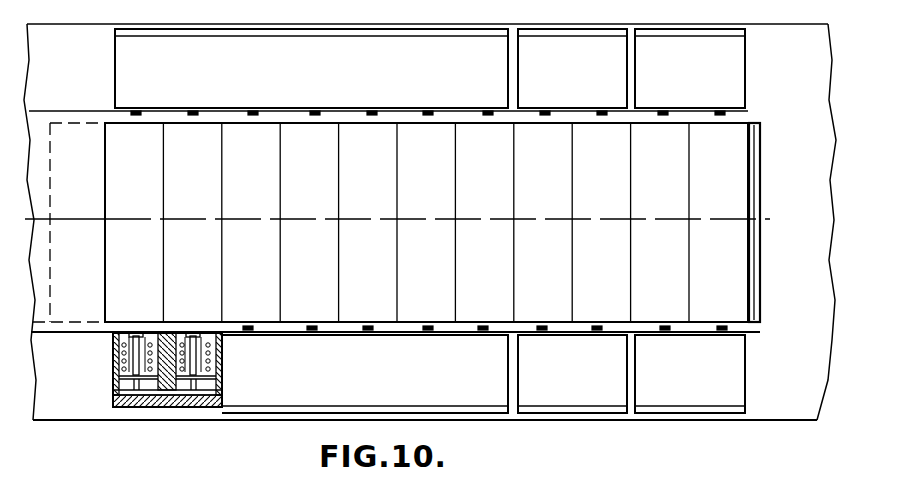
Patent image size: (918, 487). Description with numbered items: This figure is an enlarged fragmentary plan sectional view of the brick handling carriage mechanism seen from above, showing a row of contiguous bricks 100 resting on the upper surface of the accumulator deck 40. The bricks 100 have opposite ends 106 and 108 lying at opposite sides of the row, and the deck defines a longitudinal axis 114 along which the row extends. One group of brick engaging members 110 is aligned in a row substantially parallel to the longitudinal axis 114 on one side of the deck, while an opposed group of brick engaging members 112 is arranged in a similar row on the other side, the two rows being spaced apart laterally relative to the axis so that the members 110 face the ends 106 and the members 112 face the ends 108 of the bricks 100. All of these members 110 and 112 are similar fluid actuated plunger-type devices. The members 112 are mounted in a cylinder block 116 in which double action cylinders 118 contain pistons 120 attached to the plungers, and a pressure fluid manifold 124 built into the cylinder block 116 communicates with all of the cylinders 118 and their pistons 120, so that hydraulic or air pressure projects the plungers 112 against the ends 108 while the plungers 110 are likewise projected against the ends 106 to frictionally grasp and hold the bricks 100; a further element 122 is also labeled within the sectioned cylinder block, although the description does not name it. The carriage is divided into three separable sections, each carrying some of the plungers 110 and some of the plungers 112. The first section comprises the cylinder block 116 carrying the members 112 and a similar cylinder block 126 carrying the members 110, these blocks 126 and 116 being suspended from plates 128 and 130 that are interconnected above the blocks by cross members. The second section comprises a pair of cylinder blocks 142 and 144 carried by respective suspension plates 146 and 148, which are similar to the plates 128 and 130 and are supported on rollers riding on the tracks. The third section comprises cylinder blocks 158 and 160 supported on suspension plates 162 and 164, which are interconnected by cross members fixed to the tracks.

The accumulator deck 40 is at (788, 132).
The bricks 100 is at (432, 271).
The ends of the bricks 106 is at (359, 130).
The ends of the bricks 108 is at (388, 328).
The brick engaging members 110 is at (252, 110).
The brick engaging members 112 is at (186, 330).
The longitudinal axis 114 is at (306, 212).
The cylinder block 116 is at (259, 377).
The double action cylinders 118 is at (215, 358).
The pistons 120 is at (230, 337).
The coil 122 is at (185, 345).
The pressure fluid manifold 124 is at (116, 401).
The cylinder block 126 is at (133, 60).
The suspension plate 128 is at (246, 34).
The suspension plate 130 is at (306, 410).
The cylinder block 142 is at (537, 100).
The cylinder block 144 is at (565, 388).
The suspension plate 146 is at (615, 38).
The suspension plate 148 is at (612, 408).
The cylinder block 158 is at (728, 84).
The cylinder block 160 is at (735, 383).
The suspension plate 162 is at (746, 33).
The suspension plate 164 is at (745, 407).